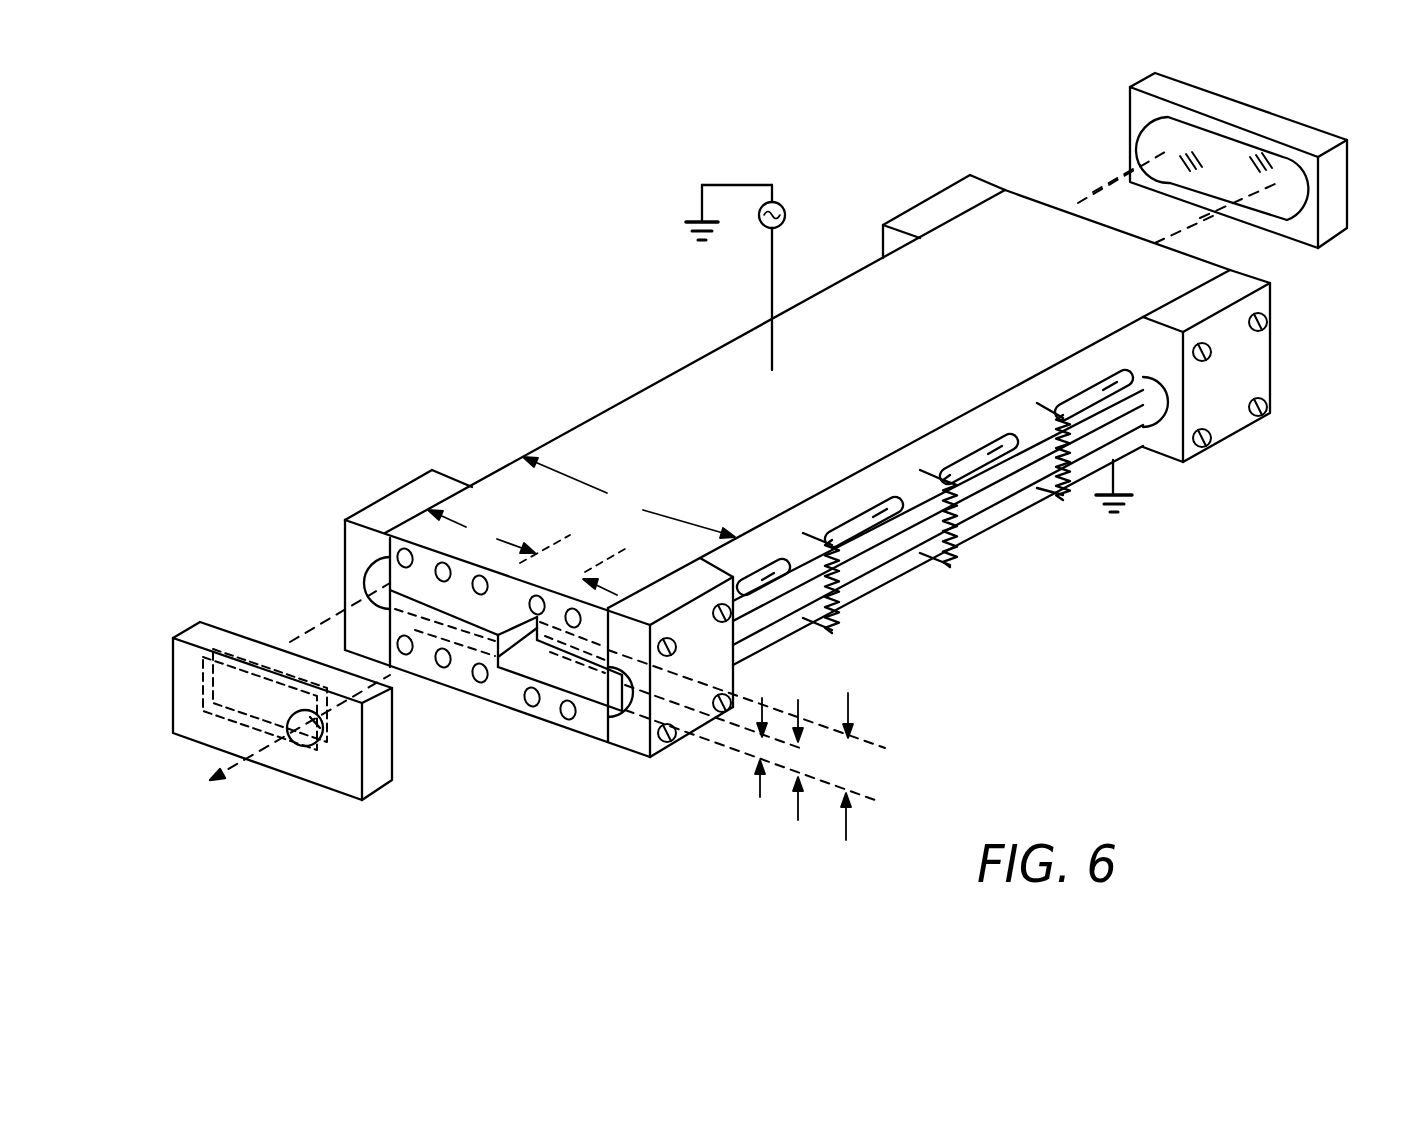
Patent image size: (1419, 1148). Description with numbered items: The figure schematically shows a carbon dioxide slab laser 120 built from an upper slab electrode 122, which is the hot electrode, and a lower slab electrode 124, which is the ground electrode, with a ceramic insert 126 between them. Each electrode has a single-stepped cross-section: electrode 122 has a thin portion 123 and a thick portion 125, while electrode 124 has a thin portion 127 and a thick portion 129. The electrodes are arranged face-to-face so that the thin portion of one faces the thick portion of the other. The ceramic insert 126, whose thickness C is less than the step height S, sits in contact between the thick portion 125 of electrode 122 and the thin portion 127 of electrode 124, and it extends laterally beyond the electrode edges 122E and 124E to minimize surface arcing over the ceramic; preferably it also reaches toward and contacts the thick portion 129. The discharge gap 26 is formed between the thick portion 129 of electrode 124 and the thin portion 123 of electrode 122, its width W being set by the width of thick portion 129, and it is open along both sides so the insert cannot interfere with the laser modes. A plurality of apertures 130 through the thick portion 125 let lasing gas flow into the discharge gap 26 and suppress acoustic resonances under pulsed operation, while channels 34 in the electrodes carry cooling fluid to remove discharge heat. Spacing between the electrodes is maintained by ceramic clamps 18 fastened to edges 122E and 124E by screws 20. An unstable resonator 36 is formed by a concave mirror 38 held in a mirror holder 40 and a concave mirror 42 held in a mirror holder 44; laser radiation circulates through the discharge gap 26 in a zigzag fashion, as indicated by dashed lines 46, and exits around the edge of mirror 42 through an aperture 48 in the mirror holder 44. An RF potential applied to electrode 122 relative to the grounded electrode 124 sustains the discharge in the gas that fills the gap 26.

The ceramic clamps 18 is at (440, 483).
The screws 20 is at (1267, 413).
The discharge gap 26 is at (436, 598).
The channels 34 is at (390, 540).
The unstable resonator 36 is at (1156, 227).
The concave mirror 38 is at (1300, 205).
The mirror holder 40 is at (1314, 244).
The concave mirror 42 is at (198, 732).
The mirror holder 44 is at (185, 742).
The dashed lines 46 is at (293, 640).
The aperture 48 is at (307, 693).
The slab laser 120 is at (1075, 629).
The upper slab electrode 122 is at (566, 412).
The edge of electrode 122 122E is at (743, 532).
The thin portion of electrode 122 123 is at (388, 552).
The lower slab electrode 124 is at (486, 714).
The edge of electrode 124 124E is at (1000, 472).
The thick portion of electrode 122 125 is at (558, 690).
The ceramic insert 126 is at (1012, 492).
The thin portion of electrode 124 127 is at (515, 702).
The thick portion of electrode 124 129 is at (450, 677).
The apertures 130 is at (863, 525).